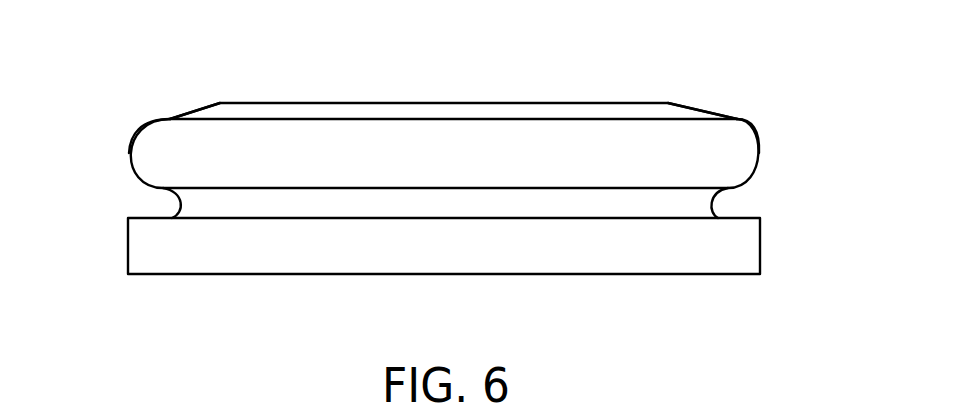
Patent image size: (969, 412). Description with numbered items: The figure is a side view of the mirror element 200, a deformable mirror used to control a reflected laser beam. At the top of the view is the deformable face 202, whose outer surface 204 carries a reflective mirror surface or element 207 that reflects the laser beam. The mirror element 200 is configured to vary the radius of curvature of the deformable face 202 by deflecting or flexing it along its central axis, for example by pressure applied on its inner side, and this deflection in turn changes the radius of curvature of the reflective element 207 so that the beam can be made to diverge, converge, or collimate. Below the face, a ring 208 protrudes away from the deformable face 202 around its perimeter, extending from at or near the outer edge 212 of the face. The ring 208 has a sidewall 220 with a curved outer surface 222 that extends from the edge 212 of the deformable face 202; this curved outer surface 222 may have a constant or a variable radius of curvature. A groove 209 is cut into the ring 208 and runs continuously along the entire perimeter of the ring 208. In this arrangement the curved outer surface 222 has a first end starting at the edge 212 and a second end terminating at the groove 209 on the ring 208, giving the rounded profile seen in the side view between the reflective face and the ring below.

The mirror element 200 is at (778, 53).
The deformable face 202 is at (343, 103).
The outer surface 204 is at (648, 103).
The reflective mirror element 207 is at (475, 103).
The ring 208 is at (748, 245).
The groove 209 is at (725, 203).
The outer edge 212 is at (737, 118).
The sidewall 220 is at (131, 133).
The curved outer surface 222 is at (760, 150).